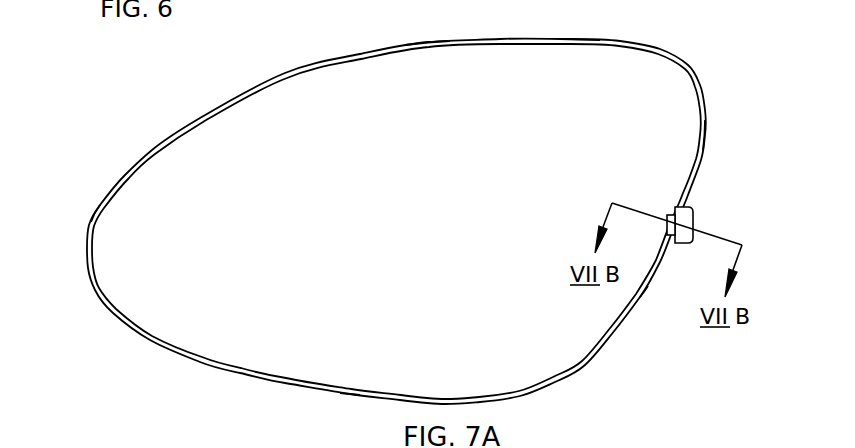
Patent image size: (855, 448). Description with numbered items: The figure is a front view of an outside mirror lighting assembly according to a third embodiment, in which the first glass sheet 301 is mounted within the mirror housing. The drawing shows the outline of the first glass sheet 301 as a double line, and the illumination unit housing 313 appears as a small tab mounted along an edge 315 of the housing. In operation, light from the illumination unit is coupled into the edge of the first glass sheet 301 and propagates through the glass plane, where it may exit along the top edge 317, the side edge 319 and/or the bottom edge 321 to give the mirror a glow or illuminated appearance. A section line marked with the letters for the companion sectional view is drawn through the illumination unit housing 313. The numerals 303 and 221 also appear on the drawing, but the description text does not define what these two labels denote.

The first glass sheet 301 is at (490, 88).
The lens top edge portion 303 is at (582, 37).
The illumination unit housing 313 is at (696, 215).
The edge 315 is at (637, 318).
The top edge 317 is at (440, 41).
The side edge 319 is at (99, 203).
The bottom edge 321 is at (353, 397).
The frame rim 221 is at (705, 136).